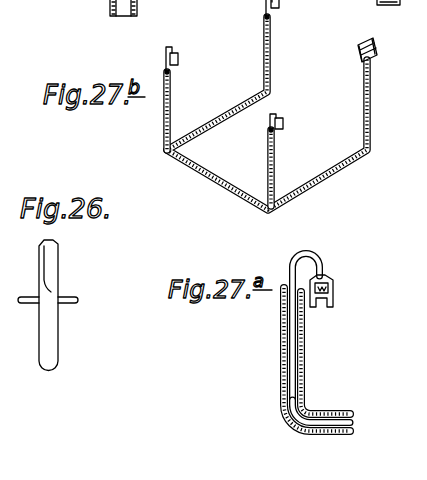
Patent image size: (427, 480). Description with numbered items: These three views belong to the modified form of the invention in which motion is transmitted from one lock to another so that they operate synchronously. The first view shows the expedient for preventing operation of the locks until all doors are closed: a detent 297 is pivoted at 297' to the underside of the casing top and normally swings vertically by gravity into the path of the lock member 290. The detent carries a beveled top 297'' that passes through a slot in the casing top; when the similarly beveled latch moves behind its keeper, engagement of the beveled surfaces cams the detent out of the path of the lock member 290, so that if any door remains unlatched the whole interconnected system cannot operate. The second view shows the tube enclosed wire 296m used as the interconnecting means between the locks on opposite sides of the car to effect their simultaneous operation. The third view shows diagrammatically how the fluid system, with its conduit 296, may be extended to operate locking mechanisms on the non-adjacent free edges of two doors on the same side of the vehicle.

In FIG. 27B, the fluid conduit 296 is at (138, 4).
In FIG. 26, the detent 297 is at (77, 305).
In FIG. 26, the detent pivot 297' is at (71, 284).
In FIG. 26, the beveled top of detent 297'' is at (81, 266).
In FIG. 27A, the tube enclosed wire 296m is at (294, 356).
In FIG. 27A, the lock member 290 is at (334, 283).